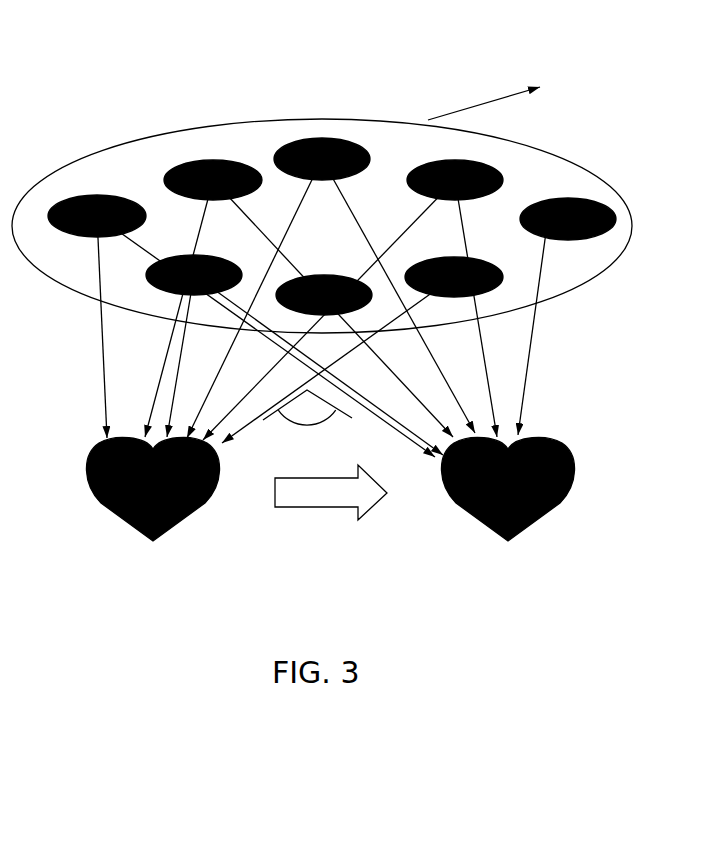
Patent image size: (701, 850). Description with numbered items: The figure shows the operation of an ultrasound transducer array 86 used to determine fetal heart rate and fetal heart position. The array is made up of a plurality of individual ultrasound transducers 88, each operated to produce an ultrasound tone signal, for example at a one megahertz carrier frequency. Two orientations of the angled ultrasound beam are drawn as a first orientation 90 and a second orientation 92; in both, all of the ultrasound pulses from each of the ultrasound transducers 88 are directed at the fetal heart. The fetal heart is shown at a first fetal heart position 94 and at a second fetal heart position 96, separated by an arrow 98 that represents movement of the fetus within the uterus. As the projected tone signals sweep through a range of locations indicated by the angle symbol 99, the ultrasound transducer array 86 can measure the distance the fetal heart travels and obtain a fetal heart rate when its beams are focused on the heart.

The ultrasound transducer array 86 is at (380, 90).
The ultrasound transducers 88 is at (77, 196).
The first orientation 90 is at (100, 353).
The second orientation 92 is at (530, 343).
The first fetal heart position 94 is at (128, 517).
The second fetal heart position 96 is at (548, 503).
The arrow 98 is at (317, 492).
The angle indicator 99 is at (303, 418).